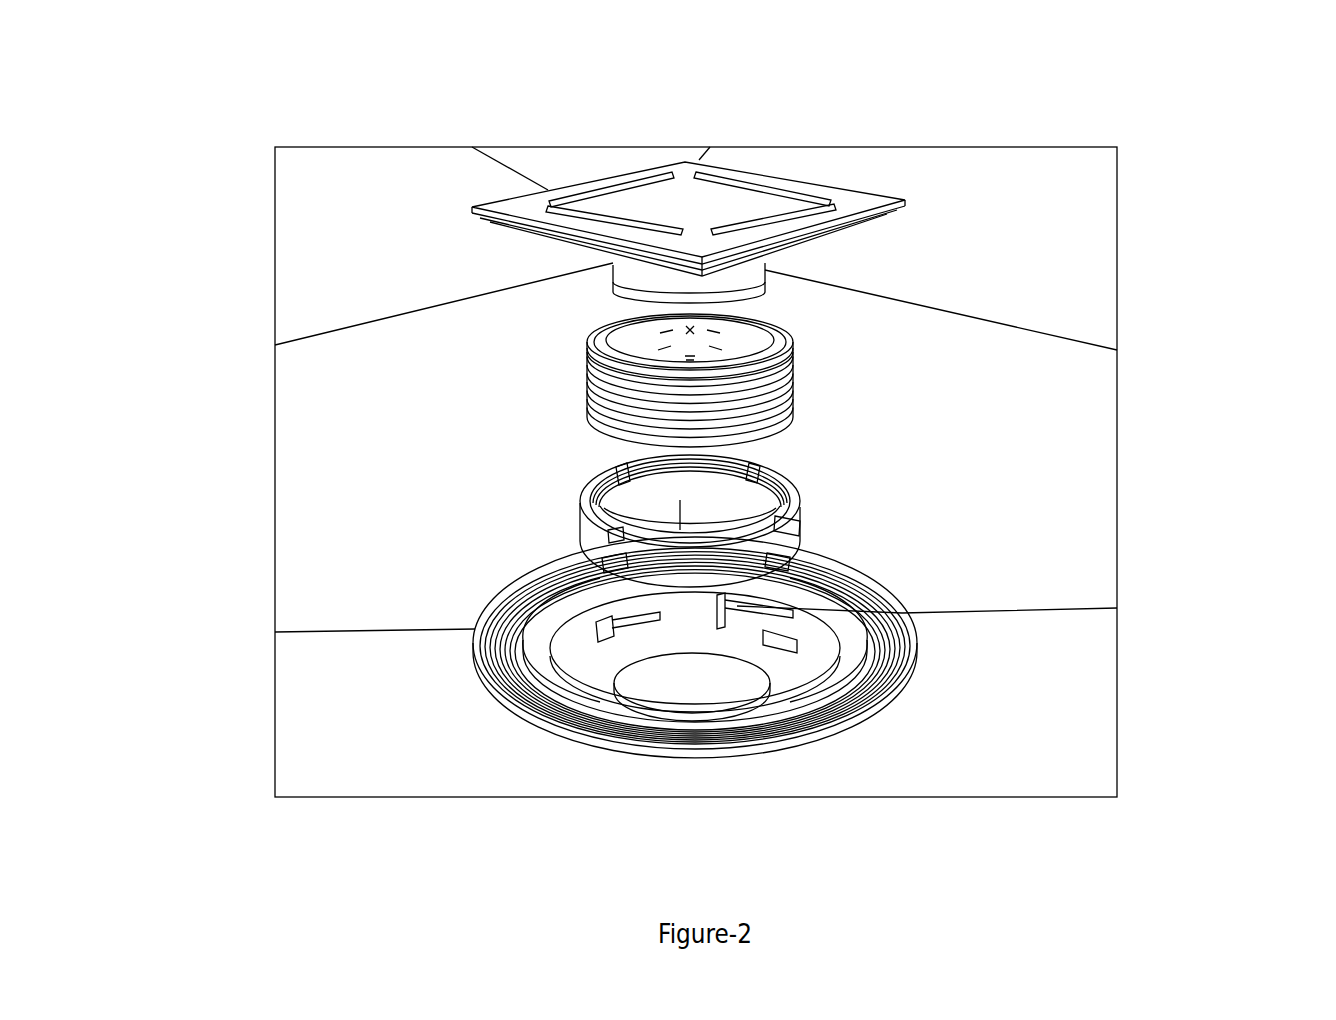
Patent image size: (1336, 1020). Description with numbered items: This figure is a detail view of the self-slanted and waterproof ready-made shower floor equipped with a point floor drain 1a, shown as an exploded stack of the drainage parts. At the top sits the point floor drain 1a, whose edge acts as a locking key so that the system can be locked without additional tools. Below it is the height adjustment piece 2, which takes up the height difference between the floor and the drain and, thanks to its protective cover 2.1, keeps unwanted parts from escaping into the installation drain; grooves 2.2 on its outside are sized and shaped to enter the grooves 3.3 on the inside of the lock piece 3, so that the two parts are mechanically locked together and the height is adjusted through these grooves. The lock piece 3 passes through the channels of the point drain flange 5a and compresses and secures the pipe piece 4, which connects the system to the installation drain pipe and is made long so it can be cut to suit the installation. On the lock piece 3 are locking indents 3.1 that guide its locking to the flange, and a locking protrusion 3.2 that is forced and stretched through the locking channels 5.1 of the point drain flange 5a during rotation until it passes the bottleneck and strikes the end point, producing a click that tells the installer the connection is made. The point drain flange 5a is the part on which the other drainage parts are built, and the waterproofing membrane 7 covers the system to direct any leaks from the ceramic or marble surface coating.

The point floor drain 1a is at (690, 202).
The height adjustment piece 2 is at (640, 382).
The protective cover 2.1 is at (740, 342).
The grooves 2.2 is at (800, 397).
The lock piece 3 is at (810, 598).
The locking indents 3.1 is at (620, 473).
The locking protrusion 3.2 is at (603, 578).
The grooves 3.3 is at (623, 525).
The pipe piece 4 is at (813, 732).
The point drain flange 5a is at (503, 588).
The locking channels 5.1 is at (902, 613).
The waterproofing membrane 7 is at (925, 395).